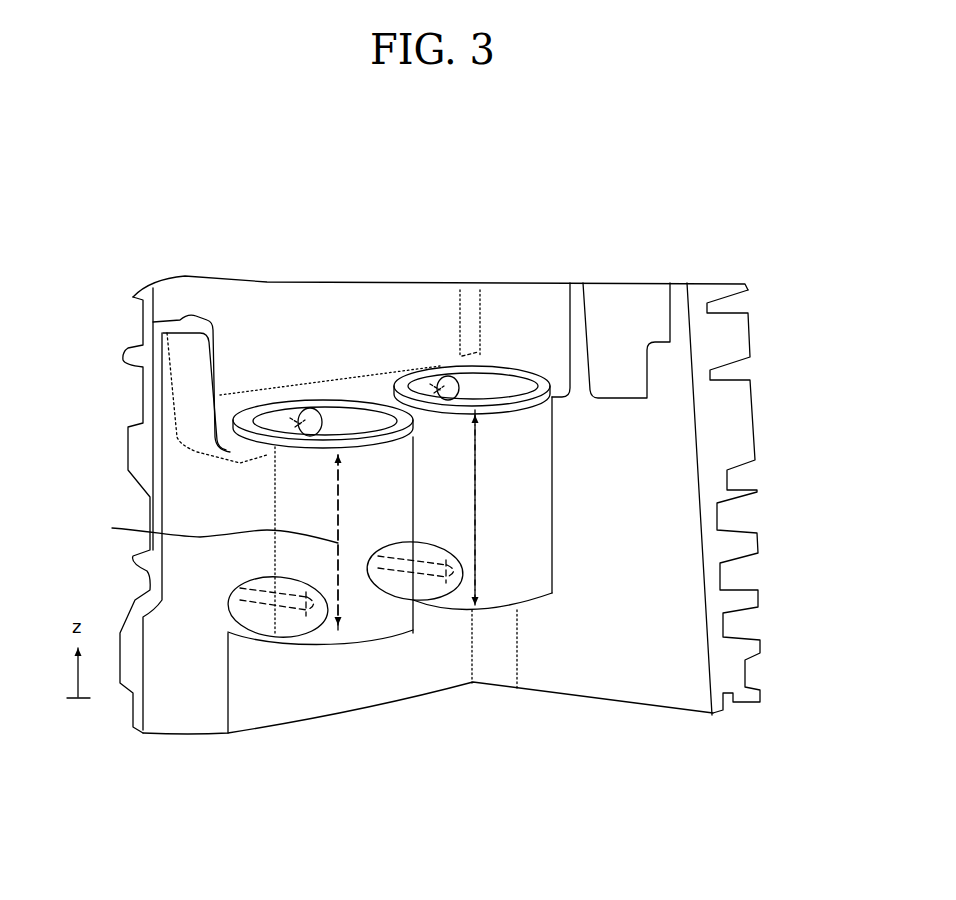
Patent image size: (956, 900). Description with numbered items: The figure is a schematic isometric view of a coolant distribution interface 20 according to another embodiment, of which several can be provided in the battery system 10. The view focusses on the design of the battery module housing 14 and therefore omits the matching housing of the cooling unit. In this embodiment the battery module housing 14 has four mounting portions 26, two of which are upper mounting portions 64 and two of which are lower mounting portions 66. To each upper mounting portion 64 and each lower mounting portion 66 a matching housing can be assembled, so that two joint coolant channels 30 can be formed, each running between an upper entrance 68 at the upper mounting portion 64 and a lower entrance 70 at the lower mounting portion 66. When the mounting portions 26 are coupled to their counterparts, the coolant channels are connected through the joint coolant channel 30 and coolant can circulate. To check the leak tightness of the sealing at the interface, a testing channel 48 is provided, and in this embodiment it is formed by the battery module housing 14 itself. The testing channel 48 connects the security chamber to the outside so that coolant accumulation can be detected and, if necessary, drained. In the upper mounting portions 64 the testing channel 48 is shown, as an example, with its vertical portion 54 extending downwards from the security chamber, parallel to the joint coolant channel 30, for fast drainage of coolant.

The battery system 10 is at (599, 176).
The battery module housing 14 is at (388, 502).
The coolant distribution interface 20 is at (412, 352).
The mounting portion 26 is at (404, 506).
The upper mounting portion 64 is at (317, 398).
The lower mounting portion 66 is at (385, 657).
The upper entrance 68 is at (287, 398).
The lower entrance 70 is at (347, 655).
The testing channel 48 is at (233, 442).
The joint coolant channel 30 is at (777, 433).
The vertical portion 54 is at (253, 397).